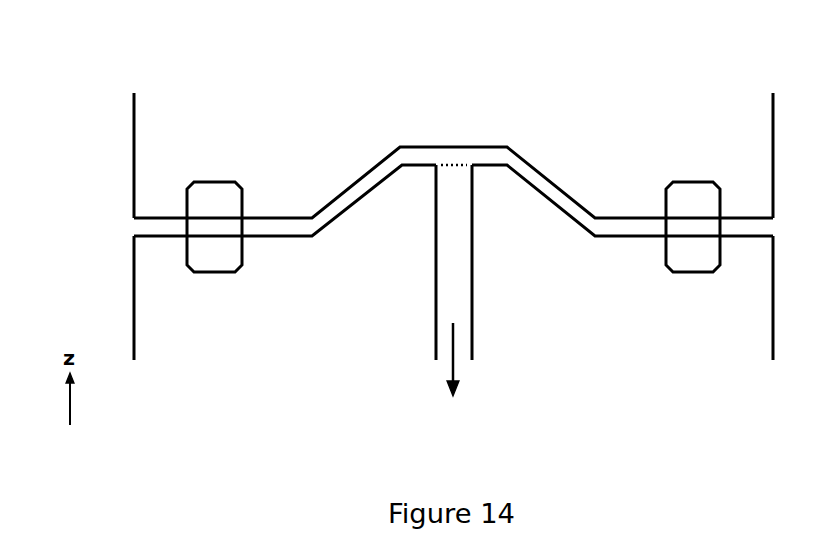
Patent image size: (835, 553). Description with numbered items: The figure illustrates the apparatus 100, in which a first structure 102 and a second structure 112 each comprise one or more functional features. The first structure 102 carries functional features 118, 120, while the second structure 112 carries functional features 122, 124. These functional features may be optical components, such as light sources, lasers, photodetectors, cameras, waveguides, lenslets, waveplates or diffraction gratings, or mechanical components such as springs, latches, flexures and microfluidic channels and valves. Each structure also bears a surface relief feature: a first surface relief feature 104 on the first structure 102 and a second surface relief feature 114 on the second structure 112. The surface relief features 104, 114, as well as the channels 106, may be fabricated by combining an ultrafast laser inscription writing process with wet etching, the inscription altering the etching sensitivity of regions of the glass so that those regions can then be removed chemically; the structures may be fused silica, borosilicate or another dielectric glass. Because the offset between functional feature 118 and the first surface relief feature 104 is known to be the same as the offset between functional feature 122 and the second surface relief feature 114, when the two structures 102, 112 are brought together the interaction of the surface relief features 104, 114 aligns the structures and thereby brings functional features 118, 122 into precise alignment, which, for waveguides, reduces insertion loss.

The apparatus 100 is at (110, 93).
The first structure 102 is at (134, 277).
The first surface relief feature 104 is at (572, 219).
The channels 106 is at (435, 324).
The second structure 112 is at (134, 149).
The second surface relief feature 114 is at (552, 183).
The functional feature 118 is at (217, 272).
The functional feature 120 is at (693, 272).
The functional feature 122 is at (213, 182).
The functional feature 124 is at (690, 182).